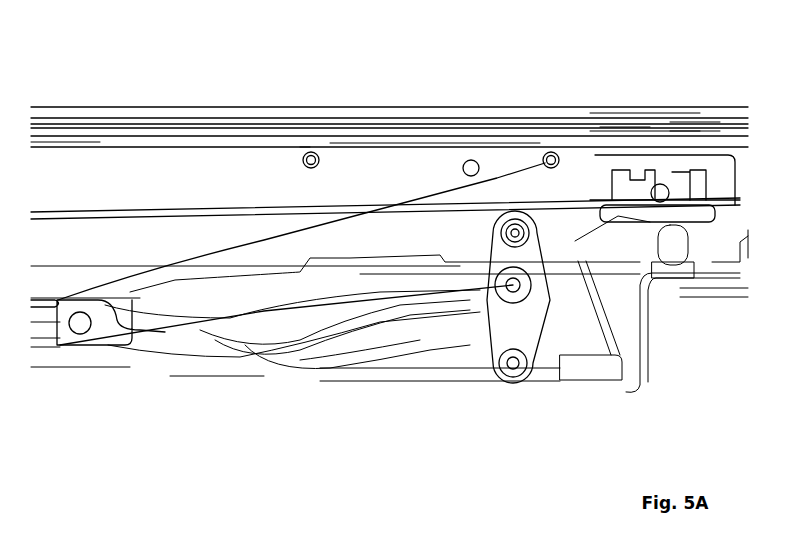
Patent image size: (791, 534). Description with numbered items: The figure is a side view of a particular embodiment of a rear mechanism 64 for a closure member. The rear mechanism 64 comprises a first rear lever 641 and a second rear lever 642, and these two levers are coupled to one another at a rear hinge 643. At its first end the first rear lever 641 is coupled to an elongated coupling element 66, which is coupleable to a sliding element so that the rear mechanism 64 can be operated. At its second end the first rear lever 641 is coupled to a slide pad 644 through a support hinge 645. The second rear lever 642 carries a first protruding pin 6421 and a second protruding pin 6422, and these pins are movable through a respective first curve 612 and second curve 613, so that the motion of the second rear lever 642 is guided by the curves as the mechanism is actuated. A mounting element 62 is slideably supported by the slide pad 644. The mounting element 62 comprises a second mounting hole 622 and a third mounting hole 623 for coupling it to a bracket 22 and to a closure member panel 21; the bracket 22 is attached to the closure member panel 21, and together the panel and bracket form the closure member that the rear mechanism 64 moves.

The closure member panel 21 is at (168, 110).
The bracket 22 is at (75, 145).
The mounting element 62 is at (140, 190).
The second mounting hole 622 is at (307, 153).
The third mounting hole 623 is at (546, 152).
The rear mechanism 64 is at (663, 315).
The first rear lever 641 is at (192, 291).
The second rear lever 642 is at (543, 308).
The first protruding pin 6421 is at (527, 362).
The second protruding pin 6422 is at (513, 285).
The rear hinge 643 is at (515, 233).
The slide pad 644 is at (695, 190).
The support hinge 645 is at (662, 191).
The elongated coupling element 66 is at (45, 330).
The first curve 612 is at (343, 335).
The second curve 613 is at (268, 323).